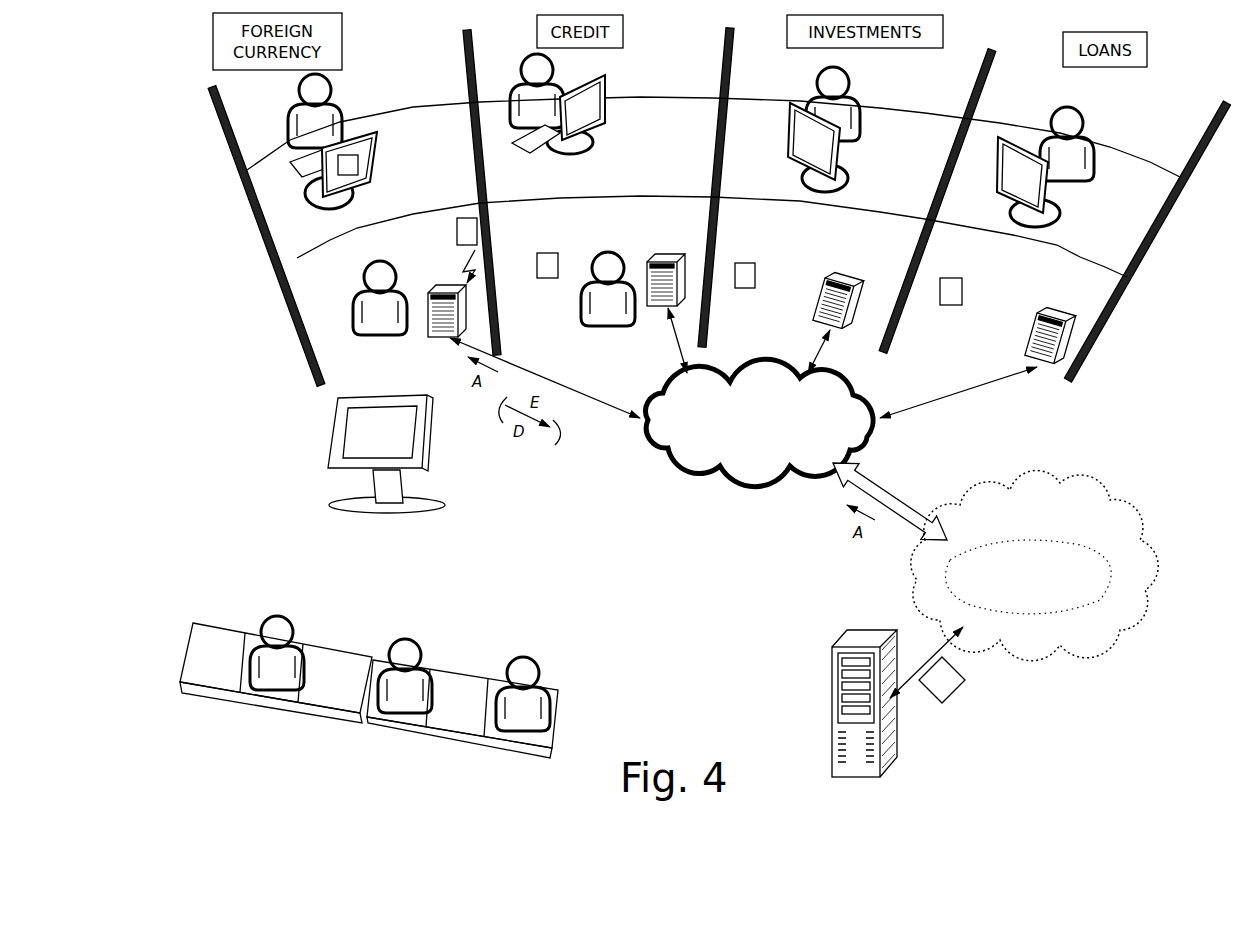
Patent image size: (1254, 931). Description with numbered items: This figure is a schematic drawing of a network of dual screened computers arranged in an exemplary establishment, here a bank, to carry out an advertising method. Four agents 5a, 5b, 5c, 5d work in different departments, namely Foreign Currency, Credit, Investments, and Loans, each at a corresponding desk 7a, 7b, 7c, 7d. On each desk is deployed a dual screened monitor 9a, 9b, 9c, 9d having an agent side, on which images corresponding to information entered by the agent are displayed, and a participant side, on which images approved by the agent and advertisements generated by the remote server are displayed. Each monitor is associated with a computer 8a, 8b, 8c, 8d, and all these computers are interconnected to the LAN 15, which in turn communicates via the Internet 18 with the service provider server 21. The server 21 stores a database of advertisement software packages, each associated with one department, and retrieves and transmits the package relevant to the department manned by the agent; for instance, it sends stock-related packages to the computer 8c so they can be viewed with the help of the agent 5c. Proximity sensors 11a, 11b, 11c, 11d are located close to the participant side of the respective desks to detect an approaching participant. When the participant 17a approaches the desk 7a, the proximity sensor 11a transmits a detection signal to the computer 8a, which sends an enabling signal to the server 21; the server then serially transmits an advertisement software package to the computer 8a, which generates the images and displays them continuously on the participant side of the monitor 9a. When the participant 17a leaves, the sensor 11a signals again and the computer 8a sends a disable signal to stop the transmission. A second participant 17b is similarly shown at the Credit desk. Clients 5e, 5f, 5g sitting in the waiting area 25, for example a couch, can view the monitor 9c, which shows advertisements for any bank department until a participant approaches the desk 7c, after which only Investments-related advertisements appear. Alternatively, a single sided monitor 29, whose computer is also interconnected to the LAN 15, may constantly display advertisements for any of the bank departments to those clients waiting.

The agent 5a is at (297, 95).
The agent 5b is at (527, 55).
The agent 5c is at (855, 78).
The agent 5d is at (1050, 108).
The client 5e is at (272, 617).
The client 5f is at (407, 638).
The client 5g is at (542, 660).
The desk 7a is at (410, 207).
The desk 7b is at (670, 177).
The desk 7c is at (902, 187).
The desk 7d is at (1113, 247).
The computer 8a is at (445, 313).
The computer 8b is at (662, 287).
The computer 8c is at (815, 305).
The computer 8d is at (1050, 350).
The dual screened monitor 9a is at (370, 128).
The dual screened monitor 9b is at (623, 90).
The dual screened monitor 9c is at (788, 120).
The dual screened monitor 9d is at (1050, 180).
The proximity sensor 11a is at (455, 233).
The proximity sensor 11b is at (548, 280).
The proximity sensor 11c is at (740, 290).
The proximity sensor 11d is at (952, 307).
The LAN 15 is at (763, 477).
The participant 17a is at (360, 310).
The participant 17b is at (610, 317).
The Internet 18 is at (1000, 647).
The service provider server 21 is at (833, 700).
The waiting area 25 is at (328, 693).
The single sided monitor 29 is at (333, 432).